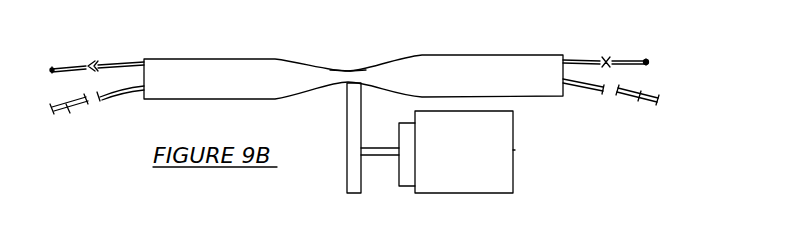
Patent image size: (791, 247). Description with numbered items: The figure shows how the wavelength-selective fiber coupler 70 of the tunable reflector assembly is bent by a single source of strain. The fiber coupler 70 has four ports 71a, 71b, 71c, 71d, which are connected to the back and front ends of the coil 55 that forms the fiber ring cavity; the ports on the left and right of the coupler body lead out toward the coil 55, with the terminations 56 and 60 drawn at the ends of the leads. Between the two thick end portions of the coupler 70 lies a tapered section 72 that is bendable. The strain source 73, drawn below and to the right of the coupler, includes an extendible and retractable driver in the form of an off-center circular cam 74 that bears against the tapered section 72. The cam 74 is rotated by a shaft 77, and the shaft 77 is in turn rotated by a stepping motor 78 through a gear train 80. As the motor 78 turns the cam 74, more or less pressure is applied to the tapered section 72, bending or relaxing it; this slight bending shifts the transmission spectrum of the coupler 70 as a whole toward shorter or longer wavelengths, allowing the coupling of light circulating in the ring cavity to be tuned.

The coil 55 is at (70, 112).
The connector 56 is at (62, 67).
The connector 60 is at (626, 62).
The wavelength selective fiber coupler 70 is at (482, 52).
The port 71a is at (144, 63).
The port 71b is at (565, 61).
The port 71c is at (144, 89).
The port 71d is at (565, 82).
The tapered section 72 is at (314, 69).
The strain source 73 is at (532, 152).
The off-center circular cam 74 is at (347, 117).
The shaft 77 is at (381, 147).
The stepping motor 78 is at (472, 162).
The gear train 80 is at (403, 186).